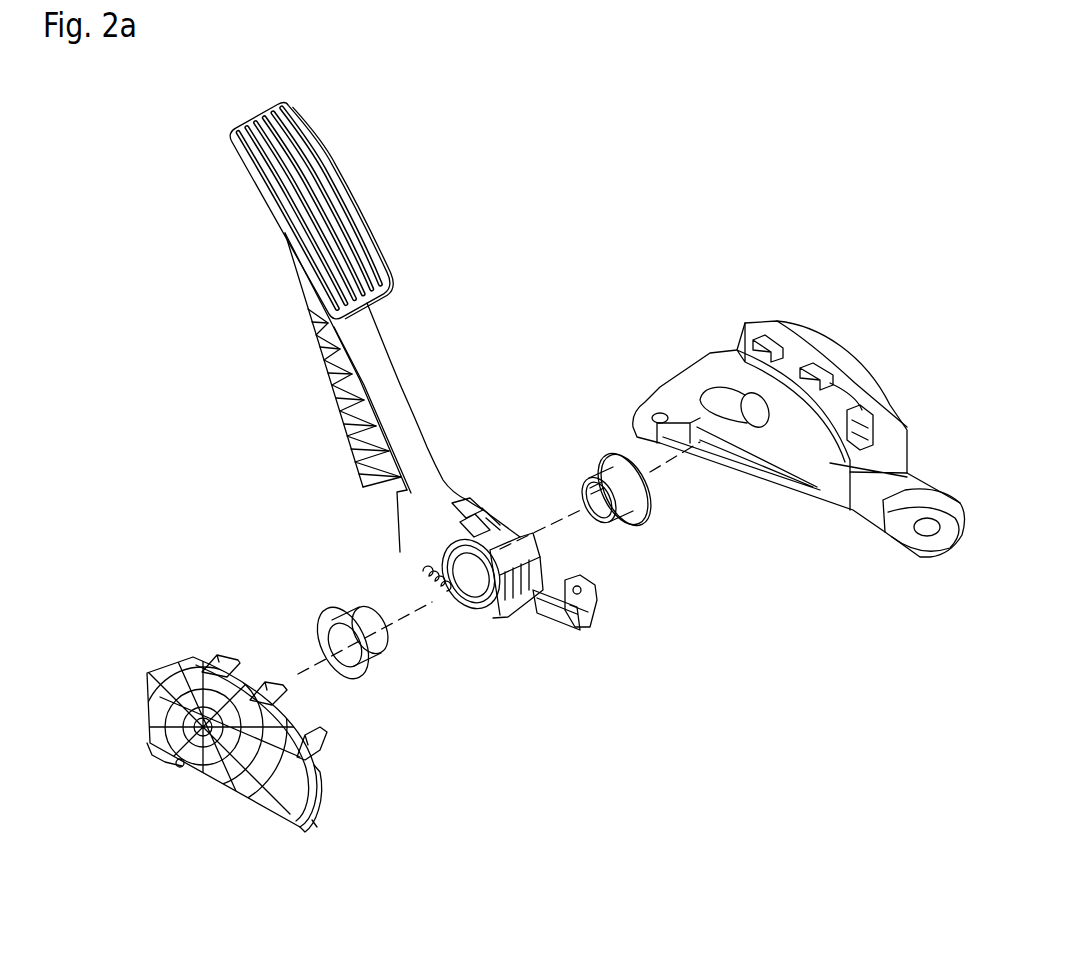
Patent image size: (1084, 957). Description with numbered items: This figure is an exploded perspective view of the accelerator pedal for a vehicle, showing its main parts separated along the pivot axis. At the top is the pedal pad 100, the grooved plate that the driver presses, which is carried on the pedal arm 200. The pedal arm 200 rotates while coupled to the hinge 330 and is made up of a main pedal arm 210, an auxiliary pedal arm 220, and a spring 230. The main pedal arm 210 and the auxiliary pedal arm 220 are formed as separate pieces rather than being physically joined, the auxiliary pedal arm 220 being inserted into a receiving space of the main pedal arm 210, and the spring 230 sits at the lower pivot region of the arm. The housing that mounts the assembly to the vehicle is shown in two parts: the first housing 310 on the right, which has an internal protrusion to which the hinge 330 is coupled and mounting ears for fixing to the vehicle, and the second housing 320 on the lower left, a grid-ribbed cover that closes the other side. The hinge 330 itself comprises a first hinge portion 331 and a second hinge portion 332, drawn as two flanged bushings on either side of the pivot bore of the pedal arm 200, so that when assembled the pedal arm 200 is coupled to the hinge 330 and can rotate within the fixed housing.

The pedal pad 100 is at (352, 200).
The pedal arm 200 is at (303, 500).
The main pedal arm 210 is at (383, 503).
The auxiliary pedal arm 220 is at (413, 545).
The spring 230 is at (428, 577).
The first housing 310 is at (733, 339).
The second housing 320 is at (212, 650).
The hinge 330 is at (720, 618).
The first hinge portion 331 is at (617, 523).
The second hinge portion 332 is at (390, 657).